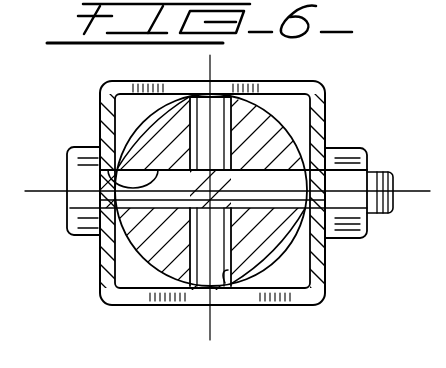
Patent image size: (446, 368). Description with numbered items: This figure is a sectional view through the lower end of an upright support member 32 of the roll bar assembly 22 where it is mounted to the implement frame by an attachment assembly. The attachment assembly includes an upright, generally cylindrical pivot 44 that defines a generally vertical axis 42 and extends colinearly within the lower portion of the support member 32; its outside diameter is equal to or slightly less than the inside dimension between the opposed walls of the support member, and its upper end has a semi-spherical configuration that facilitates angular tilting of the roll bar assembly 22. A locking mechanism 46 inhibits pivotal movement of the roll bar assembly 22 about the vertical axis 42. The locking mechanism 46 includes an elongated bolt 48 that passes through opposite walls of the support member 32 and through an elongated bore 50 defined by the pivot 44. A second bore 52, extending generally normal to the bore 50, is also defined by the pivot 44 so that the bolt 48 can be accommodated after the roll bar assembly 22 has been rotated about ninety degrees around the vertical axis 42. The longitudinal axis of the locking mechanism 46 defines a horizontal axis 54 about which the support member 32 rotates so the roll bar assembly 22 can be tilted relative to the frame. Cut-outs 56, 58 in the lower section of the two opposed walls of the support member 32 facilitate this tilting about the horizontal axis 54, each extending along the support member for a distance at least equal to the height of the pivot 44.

The roll bar assembly 22 is at (336, 116).
The upright support member 32 is at (320, 251).
The vertical axis 42 is at (120, 215).
The pivot 44 is at (256, 123).
The locking mechanism 46 is at (80, 238).
The bolt 48 is at (145, 204).
The bore 50 is at (108, 170).
The second bore 52 is at (225, 283).
The horizontal axis 54 is at (52, 191).
The cut-out 56 is at (110, 100).
The cut-out 58 is at (318, 292).